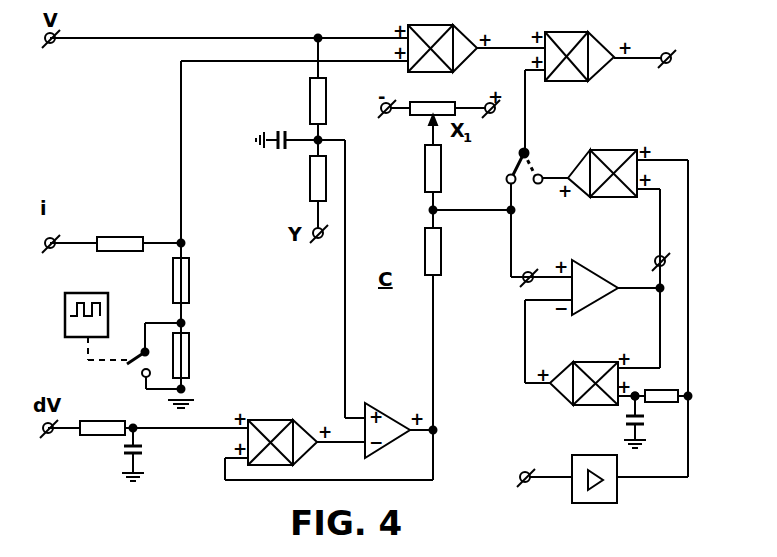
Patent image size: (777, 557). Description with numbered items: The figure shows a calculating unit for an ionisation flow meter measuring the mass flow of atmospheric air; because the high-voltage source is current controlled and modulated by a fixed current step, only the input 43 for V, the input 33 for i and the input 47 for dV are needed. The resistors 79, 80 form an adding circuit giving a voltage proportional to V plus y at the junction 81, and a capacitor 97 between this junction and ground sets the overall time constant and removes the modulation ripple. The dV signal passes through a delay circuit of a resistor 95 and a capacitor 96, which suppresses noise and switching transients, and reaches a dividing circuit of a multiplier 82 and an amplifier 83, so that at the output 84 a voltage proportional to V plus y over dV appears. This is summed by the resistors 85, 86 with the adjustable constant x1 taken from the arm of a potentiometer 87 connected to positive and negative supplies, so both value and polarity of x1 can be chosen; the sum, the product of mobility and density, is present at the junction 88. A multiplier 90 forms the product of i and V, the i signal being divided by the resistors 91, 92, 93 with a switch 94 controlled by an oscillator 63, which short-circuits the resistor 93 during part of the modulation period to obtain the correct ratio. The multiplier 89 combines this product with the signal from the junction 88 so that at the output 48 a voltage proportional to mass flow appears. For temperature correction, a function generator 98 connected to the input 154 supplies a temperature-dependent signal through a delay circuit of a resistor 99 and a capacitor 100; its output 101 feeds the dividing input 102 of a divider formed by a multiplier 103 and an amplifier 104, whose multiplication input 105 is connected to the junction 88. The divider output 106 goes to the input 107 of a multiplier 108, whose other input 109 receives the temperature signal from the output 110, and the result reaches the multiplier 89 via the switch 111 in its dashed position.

The input for V 43 is at (52, 44).
The multiplier 90 is at (455, 34).
The multiplier 89 is at (572, 82).
The output 48 is at (665, 64).
The resistor 79 is at (333, 101).
The capacitor 97 is at (282, 131).
The junction 81 is at (322, 138).
The potentiometer 87 is at (440, 102).
The resistor 86 is at (443, 178).
The resistor 85 is at (443, 258).
The junction 88 is at (436, 212).
The switch 111 is at (518, 158).
The multiplier 108 is at (610, 150).
The input of multiplier 108 109 is at (648, 158).
The input of multiplier 108 107 is at (640, 198).
The multiplication input 105 is at (531, 271).
The amplifier 104 is at (598, 280).
The output of the divider 106 is at (666, 261).
The input for i 33 is at (54, 238).
The resistor 91 is at (132, 237).
The resistor 92 is at (189, 283).
The resistor 93 is at (189, 357).
The oscillator 63 is at (106, 293).
The switch 94 is at (145, 345).
The resistor 80 is at (309, 180).
The multiplier 103 is at (596, 362).
The output of delay circuit 101 is at (636, 392).
The dividing input 102 is at (620, 404).
The resistor 99 is at (666, 402).
The capacitor 100 is at (627, 436).
The function generator 98 is at (617, 496).
The output of function generator 110 is at (619, 478).
The input 154 is at (520, 478).
The input for dV 47 is at (50, 434).
The resistor 95 is at (98, 435).
The capacitor 96 is at (142, 456).
The multiplier 82 is at (276, 420).
The amplifier 83 is at (386, 410).
The output 84 is at (436, 430).